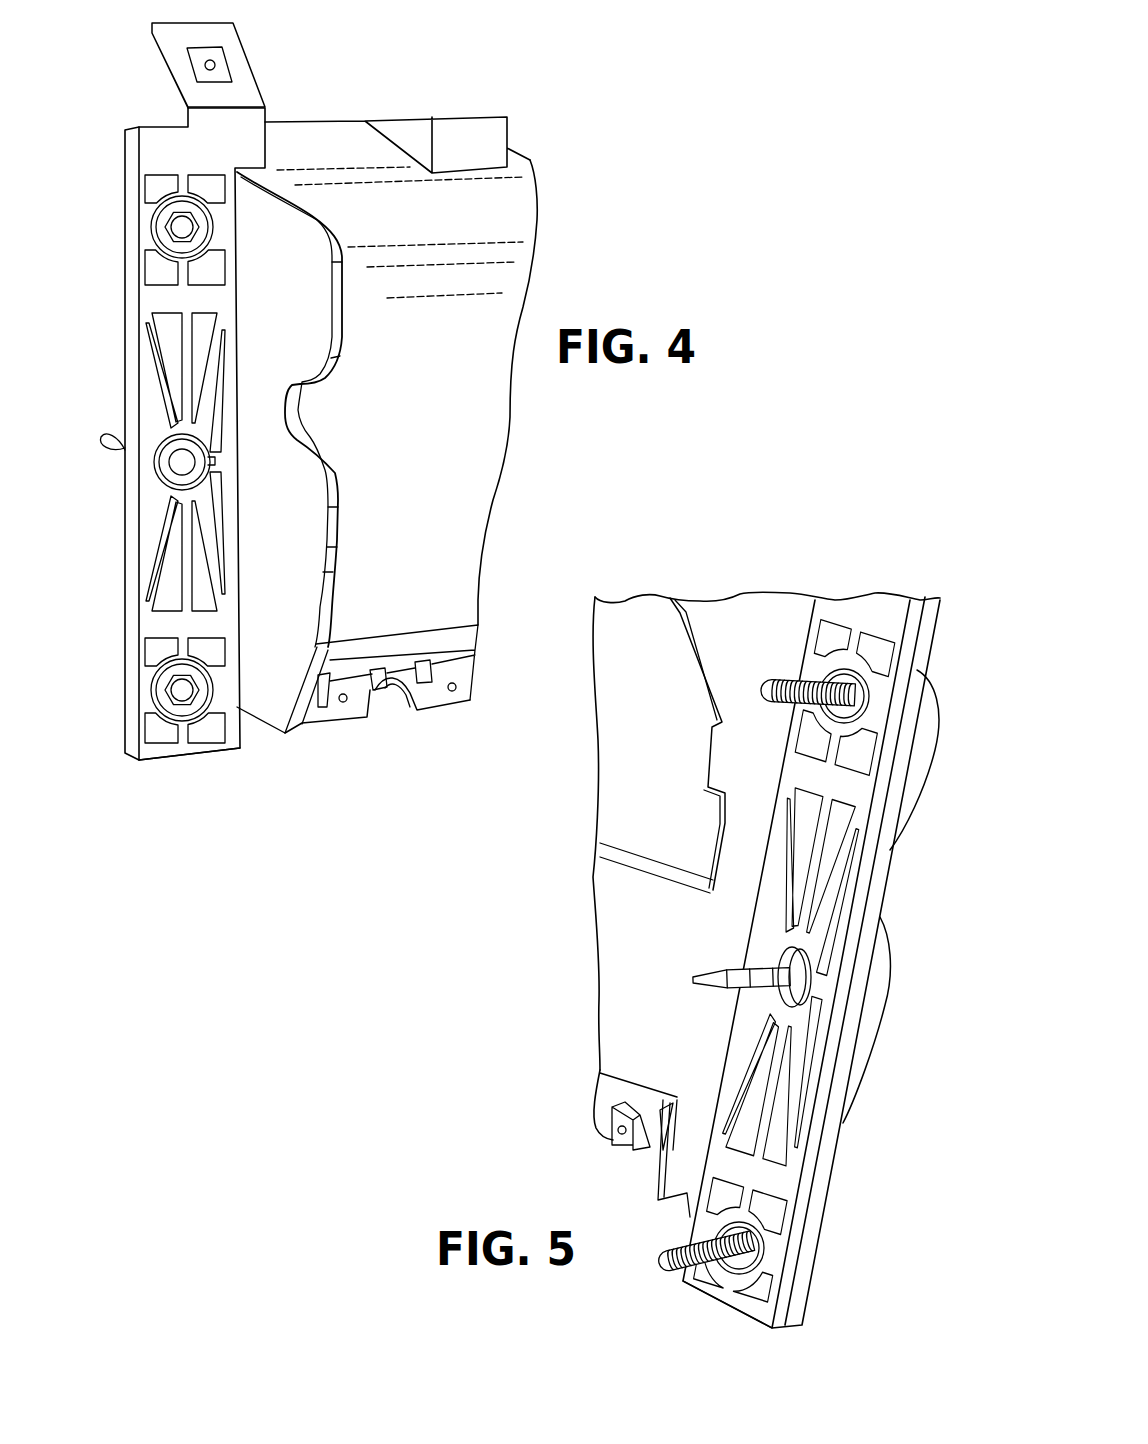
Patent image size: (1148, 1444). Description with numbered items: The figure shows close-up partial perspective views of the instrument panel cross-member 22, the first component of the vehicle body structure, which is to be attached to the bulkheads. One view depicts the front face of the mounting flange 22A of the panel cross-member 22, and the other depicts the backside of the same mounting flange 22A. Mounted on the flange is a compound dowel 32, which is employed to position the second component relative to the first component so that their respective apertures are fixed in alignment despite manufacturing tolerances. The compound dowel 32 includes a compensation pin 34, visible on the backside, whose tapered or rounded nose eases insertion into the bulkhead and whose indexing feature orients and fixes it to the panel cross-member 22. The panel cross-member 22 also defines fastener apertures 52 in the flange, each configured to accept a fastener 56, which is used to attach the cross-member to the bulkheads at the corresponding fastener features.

In FIG. 4, the panel cross-member 22 is at (523, 63).
In FIG. 5, the panel cross-member 22 is at (801, 570).
In FIG. 4, the mounting flange 22A is at (177, 750).
In FIG. 5, the mounting flange 22A is at (707, 1302).
In FIG. 4, the compound dowel 32 is at (124, 455).
In FIG. 5, the compound dowel 32 is at (667, 1012).
In FIG. 5, the compensation pin 34 is at (724, 963).
In FIG. 4, the fastener aperture 52 is at (164, 236).
In FIG. 5, the fastener aperture 52 is at (847, 716).
In FIG. 4, the fastener 56 is at (188, 218).
In FIG. 5, the fastener 56 is at (829, 672).